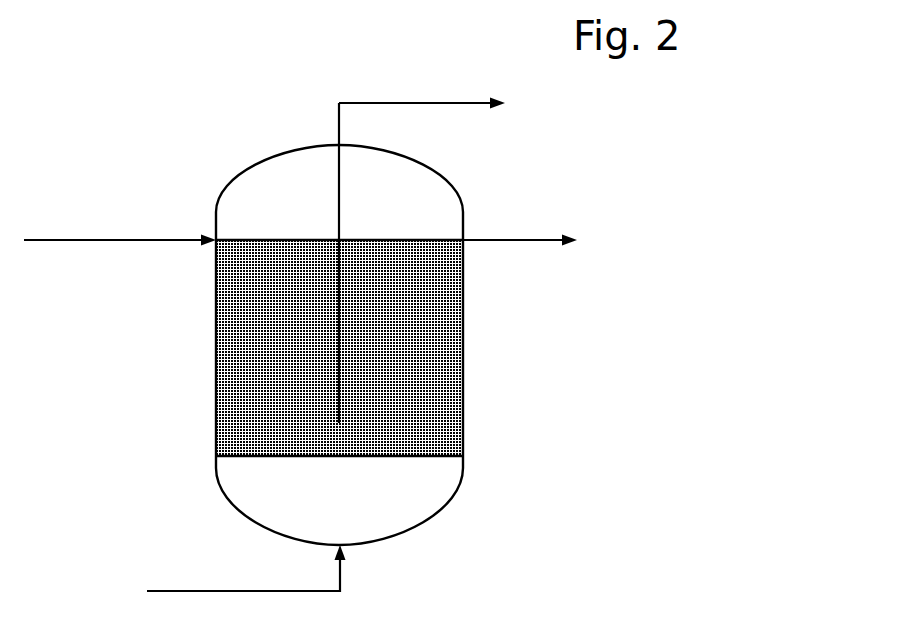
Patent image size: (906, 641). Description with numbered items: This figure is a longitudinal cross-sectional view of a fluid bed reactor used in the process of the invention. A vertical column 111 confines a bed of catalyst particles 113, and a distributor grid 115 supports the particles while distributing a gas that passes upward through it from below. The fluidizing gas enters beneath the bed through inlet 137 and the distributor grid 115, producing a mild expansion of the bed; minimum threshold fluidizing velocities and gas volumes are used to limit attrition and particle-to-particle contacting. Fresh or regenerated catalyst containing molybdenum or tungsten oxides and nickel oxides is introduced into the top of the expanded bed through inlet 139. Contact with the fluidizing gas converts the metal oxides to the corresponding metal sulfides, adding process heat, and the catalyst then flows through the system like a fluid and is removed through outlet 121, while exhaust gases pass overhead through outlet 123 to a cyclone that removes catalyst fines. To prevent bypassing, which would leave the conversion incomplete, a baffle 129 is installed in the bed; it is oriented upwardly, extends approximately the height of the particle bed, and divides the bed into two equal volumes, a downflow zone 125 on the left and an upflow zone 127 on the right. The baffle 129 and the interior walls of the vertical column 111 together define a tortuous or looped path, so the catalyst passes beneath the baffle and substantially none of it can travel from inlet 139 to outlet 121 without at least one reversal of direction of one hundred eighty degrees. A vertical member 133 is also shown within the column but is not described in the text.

The vertical column 111 is at (463, 427).
The bed of catalyst particles 113 is at (422, 212).
The distributor grid 115 is at (395, 477).
The outlet 121 is at (520, 227).
The outlet 123 is at (422, 92).
The downflow zone 125 is at (263, 348).
The upflow zone 127 is at (395, 362).
The baffle 129 is at (337, 362).
The internal conduit 133 is at (359, 263).
The inlet 137 is at (246, 568).
The inlet 139 is at (120, 224).